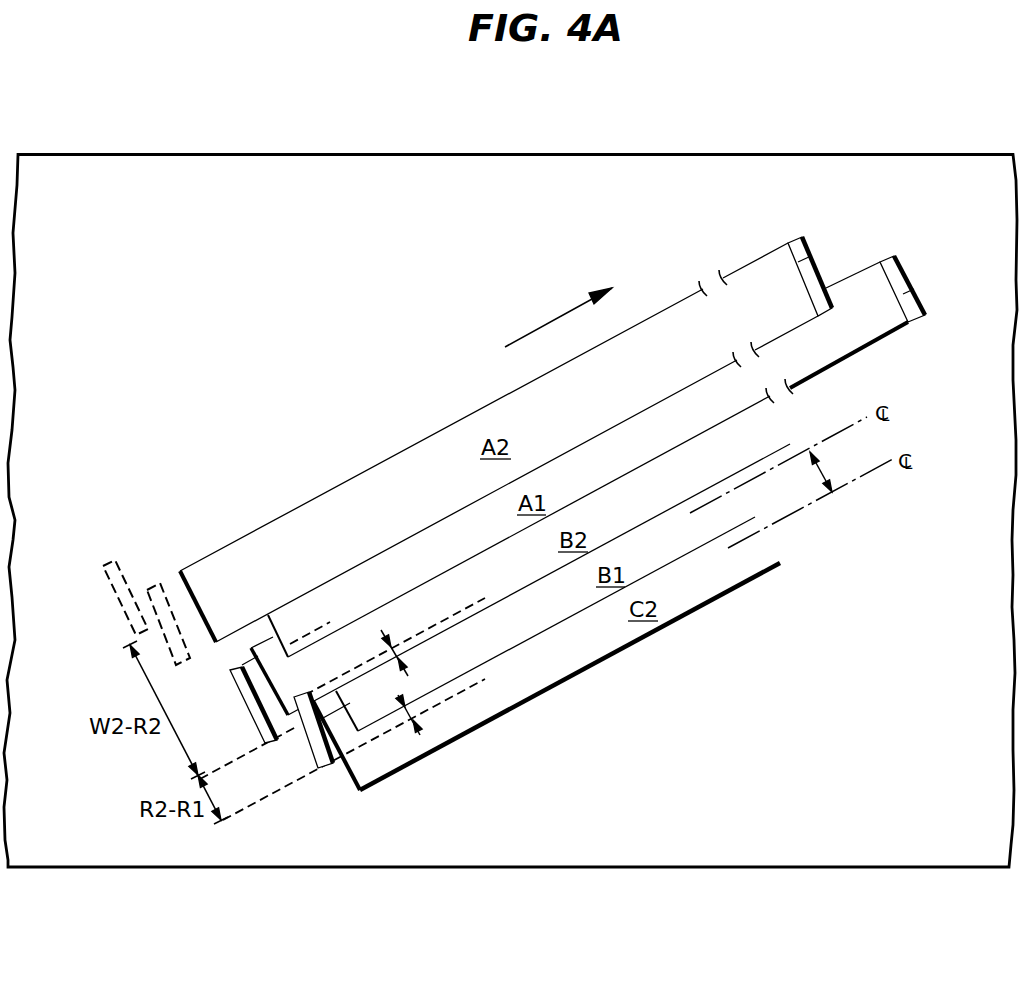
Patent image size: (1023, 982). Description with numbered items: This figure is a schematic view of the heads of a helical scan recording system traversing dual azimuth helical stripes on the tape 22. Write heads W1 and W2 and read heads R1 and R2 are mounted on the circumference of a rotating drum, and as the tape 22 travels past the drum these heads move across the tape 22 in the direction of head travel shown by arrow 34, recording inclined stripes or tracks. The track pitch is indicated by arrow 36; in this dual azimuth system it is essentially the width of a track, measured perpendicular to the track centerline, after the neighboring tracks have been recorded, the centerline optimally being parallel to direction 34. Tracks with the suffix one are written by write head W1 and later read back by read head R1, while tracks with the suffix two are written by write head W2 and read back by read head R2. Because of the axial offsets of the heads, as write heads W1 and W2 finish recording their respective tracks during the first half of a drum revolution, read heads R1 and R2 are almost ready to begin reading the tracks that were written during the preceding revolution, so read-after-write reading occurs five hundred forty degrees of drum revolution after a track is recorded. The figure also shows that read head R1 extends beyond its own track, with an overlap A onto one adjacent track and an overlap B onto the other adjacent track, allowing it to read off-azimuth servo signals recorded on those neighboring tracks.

The tape 22 is at (467, 158).
The arrow depicting direction of head travel 34 is at (553, 322).
The arrow depicting track pitch 36 is at (825, 472).
The write head W1 is at (906, 290).
The write head W2 is at (808, 258).
The read head R1 is at (318, 752).
The read head R2 is at (237, 697).
The overlap A is at (396, 648).
The overlap B is at (410, 712).